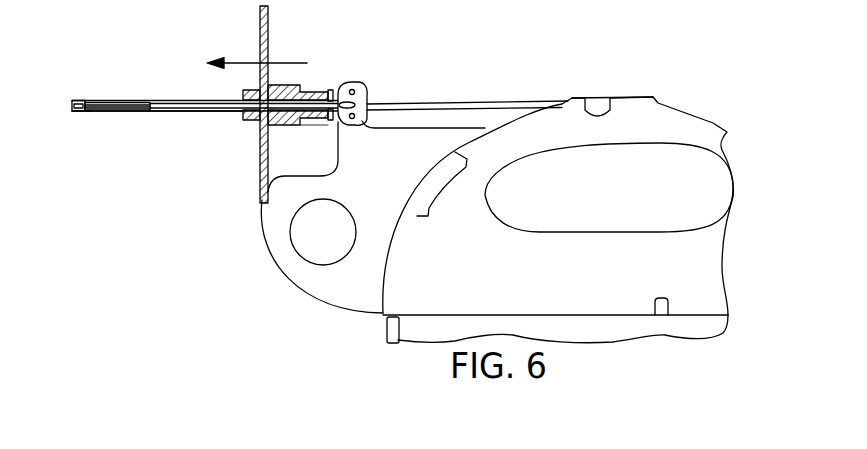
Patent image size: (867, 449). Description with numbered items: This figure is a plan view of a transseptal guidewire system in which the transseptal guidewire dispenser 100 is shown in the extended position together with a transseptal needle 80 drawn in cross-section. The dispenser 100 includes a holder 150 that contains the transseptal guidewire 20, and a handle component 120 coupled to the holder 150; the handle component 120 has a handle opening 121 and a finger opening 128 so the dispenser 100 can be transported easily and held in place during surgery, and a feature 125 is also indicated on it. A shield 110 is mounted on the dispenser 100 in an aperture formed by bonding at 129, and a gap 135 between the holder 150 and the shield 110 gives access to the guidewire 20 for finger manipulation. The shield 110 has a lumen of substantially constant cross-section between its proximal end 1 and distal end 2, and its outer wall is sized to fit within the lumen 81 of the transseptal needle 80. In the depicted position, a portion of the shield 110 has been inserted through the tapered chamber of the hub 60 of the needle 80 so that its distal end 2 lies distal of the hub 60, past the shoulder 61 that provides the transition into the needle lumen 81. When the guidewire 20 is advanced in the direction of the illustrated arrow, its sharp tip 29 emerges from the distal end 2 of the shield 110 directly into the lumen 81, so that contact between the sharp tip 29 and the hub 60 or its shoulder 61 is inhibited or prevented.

The proximal end 1 is at (320, 121).
The distal end 2 is at (143, 100).
The transseptal guidewire 20 is at (442, 103).
The sharp tip 29 is at (78, 112).
The hub 60 is at (300, 90).
The shoulder 61 is at (242, 100).
The transseptal needle 80 is at (108, 100).
The lumen 81 is at (72, 107).
The transseptal guidewire dispenser 100 is at (685, 93).
The shield 110 is at (213, 111).
The handle component 120 is at (712, 122).
The handle opening 121 is at (705, 193).
The button 125 is at (667, 298).
The finger opening 128 is at (303, 237).
The bond 129 is at (355, 83).
The gap 135 is at (467, 115).
The holder 150 is at (387, 326).